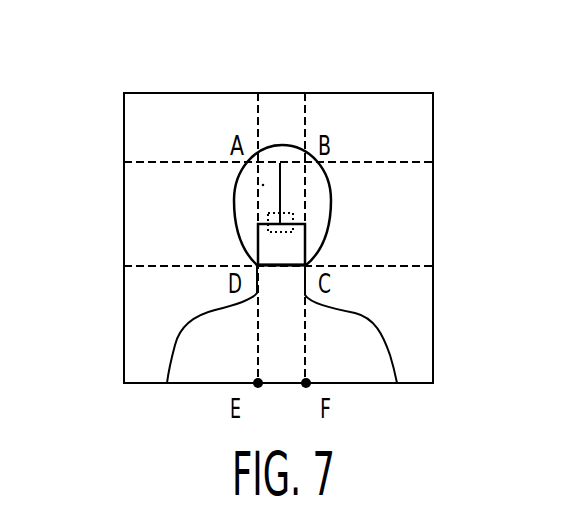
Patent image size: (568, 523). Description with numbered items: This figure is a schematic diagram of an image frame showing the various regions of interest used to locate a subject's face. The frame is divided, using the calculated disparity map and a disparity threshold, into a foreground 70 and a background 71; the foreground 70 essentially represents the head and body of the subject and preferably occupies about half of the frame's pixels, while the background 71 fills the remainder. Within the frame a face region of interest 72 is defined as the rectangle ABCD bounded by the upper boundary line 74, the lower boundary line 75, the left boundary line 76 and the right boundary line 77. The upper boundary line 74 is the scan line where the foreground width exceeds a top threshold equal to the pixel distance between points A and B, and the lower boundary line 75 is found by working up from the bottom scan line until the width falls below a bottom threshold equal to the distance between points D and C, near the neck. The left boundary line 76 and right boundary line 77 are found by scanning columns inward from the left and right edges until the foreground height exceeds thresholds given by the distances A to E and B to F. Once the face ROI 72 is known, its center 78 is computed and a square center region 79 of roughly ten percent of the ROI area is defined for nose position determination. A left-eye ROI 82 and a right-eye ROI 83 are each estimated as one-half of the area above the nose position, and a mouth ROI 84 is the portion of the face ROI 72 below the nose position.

The foreground 70 is at (392, 348).
The background 71 is at (417, 207).
The face region of interest 72 is at (292, 162).
The upper boundary line 74 is at (178, 162).
The lower boundary line 75 is at (163, 267).
The left boundary line 76 is at (257, 113).
The right boundary line 77 is at (305, 102).
The center 78 is at (292, 221).
The center region 79 is at (292, 213).
The left-eye ROI 82 is at (263, 185).
The right-eye ROI 83 is at (290, 190).
The mouth ROI 84 is at (288, 255).